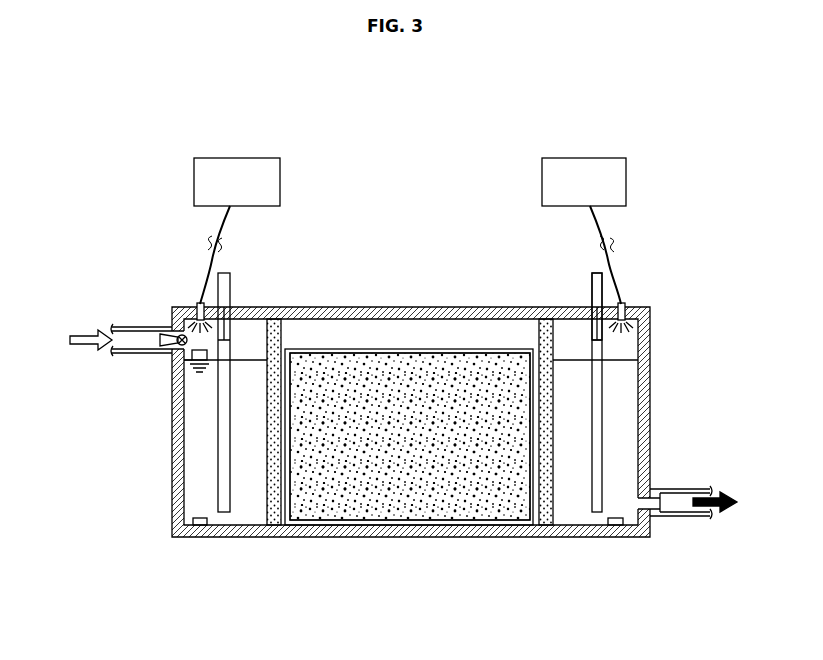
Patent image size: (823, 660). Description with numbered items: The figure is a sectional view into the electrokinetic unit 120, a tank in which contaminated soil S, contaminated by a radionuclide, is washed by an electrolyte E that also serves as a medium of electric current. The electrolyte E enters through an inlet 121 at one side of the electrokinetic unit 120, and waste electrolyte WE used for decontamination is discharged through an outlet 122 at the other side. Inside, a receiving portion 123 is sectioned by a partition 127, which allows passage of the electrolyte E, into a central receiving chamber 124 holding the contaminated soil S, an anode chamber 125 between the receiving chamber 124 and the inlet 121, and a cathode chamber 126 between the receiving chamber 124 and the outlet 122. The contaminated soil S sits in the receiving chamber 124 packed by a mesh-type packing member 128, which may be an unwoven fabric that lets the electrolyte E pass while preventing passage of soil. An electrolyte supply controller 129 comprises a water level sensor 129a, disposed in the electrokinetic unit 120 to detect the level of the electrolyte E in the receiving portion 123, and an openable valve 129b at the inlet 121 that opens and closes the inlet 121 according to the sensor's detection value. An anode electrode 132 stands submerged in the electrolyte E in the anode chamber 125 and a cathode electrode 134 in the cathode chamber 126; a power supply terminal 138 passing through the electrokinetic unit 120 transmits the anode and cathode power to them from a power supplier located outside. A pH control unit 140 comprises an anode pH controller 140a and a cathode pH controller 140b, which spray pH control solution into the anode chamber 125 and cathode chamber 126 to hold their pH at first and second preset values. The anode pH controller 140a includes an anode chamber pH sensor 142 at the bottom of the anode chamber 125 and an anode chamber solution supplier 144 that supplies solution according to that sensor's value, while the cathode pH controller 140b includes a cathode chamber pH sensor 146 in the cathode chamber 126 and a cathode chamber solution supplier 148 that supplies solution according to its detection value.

The electrokinetic unit 120 is at (468, 548).
The inlet 121 is at (162, 340).
The outlet 122 is at (660, 498).
The receiving portion 123 is at (520, 232).
The receiving chamber 124 is at (416, 333).
The anode chamber 125 is at (250, 334).
The cathode chamber 126 is at (574, 334).
The partition 127 is at (272, 523).
The packing member 128 is at (352, 526).
The electrolyte supply controller 129 is at (70, 375).
The water level sensor 129a is at (182, 364).
The valve 129b is at (176, 352).
The anode electrode 132 is at (218, 450).
The cathode electrode 134 is at (600, 413).
The power supply terminal 138 is at (592, 274).
The pH control unit 140 is at (323, 110).
The anode pH controller 140a is at (290, 177).
The cathode pH controller 140b is at (533, 177).
The anode chamber pH sensor 142 is at (198, 526).
The anode chamber solution supplier 144 is at (232, 158).
The cathode chamber pH sensor 146 is at (615, 526).
The cathode chamber solution supplier 148 is at (580, 158).
The contaminated soil S is at (418, 517).
The electrolyte E is at (188, 494).
The waste electrolyte WE is at (732, 502).